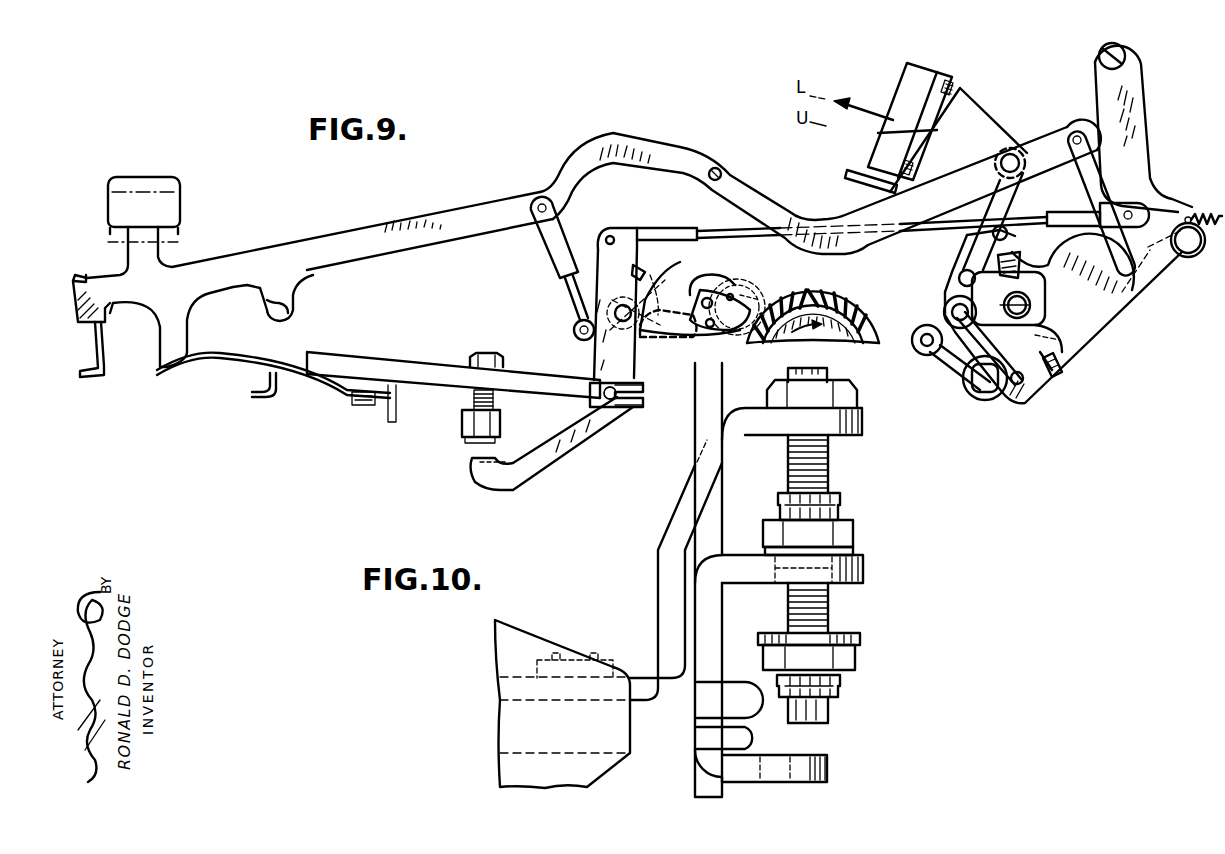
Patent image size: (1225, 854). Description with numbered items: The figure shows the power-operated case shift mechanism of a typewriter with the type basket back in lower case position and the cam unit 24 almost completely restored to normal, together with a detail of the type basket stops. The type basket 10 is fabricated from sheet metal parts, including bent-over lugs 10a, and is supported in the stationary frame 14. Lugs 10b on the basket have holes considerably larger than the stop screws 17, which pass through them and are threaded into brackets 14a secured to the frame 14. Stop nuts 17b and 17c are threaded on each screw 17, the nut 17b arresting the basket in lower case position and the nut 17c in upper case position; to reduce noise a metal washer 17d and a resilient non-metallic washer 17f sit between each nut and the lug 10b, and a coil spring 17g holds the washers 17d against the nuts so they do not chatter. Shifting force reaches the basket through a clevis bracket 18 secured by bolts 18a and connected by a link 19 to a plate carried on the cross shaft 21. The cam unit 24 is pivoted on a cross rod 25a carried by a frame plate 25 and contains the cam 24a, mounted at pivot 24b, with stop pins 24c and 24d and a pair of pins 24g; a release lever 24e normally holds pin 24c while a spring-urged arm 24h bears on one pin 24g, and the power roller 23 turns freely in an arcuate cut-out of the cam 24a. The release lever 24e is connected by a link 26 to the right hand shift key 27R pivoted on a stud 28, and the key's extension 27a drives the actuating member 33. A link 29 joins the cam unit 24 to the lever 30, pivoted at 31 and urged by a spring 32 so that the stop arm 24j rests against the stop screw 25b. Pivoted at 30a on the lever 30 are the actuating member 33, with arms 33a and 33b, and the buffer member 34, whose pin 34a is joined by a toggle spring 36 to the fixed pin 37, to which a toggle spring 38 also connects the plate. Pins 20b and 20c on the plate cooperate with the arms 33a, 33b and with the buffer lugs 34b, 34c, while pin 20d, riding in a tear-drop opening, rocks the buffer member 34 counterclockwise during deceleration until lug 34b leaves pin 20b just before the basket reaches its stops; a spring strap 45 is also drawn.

In FIG. 9, the type basket frame 10 is at (933, 82).
In FIG. 10, the bent-over lugs 10a is at (808, 757).
In FIG. 10, the lugs 10b is at (862, 570).
In FIG. 10, the stationary frame 14 is at (515, 718).
In FIG. 10, the brackets 14a is at (665, 607).
In FIG. 10, the stop screws 17 is at (832, 462).
In FIG. 10, the stop nut 17b is at (847, 530).
In FIG. 10, the stop nut 17c is at (845, 680).
In FIG. 10, the metal washer 17d is at (852, 658).
In FIG. 10, the non-metallic washer 17f is at (860, 637).
In FIG. 10, the coil spring 17g is at (835, 598).
In FIG. 9, the clevis bracket 18 is at (977, 115).
In FIG. 9, the bolts 18a is at (905, 133).
In FIG. 9, the link 19 is at (990, 207).
In FIG. 9, the pin 20b is at (1005, 228).
In FIG. 9, the pin 20c is at (1032, 395).
In FIG. 9, the pin 20d is at (1108, 322).
In FIG. 9, the cross shaft 21 is at (1004, 305).
In FIG. 9, the power roller 23 is at (830, 300).
In FIG. 9, the cam unit 24 is at (565, 445).
In FIG. 9, the cam 24a is at (765, 305).
In FIG. 9, the cam pivot 24b is at (668, 345).
In FIG. 9, the stop pin 24c is at (660, 280).
In FIG. 9, the stop pin 24d is at (750, 285).
In FIG. 9, the release lever 24e is at (660, 345).
In FIG. 9, the pins 24g is at (732, 290).
In FIG. 9, the arm 24h is at (705, 275).
In FIG. 9, the stop arm 24j is at (472, 462).
In FIG. 9, the frame plate 25 is at (435, 378).
In FIG. 9, the cross rod 25a is at (612, 400).
In FIG. 9, the stop screw 25b is at (462, 425).
In FIG. 9, the link 26 is at (550, 250).
In FIG. 9, the right hand shift key 27R is at (335, 243).
In FIG. 9, the extension 27a is at (757, 190).
In FIG. 9, the stud 28 is at (715, 168).
In FIG. 9, the link 29 is at (700, 228).
In FIG. 9, the lever 30 is at (1136, 75).
In FIG. 9, the pivot 30a is at (1178, 208).
In FIG. 9, the pivot 31 is at (1125, 45).
In FIG. 9, the spring 32 is at (1205, 200).
In FIG. 9, the actuating member 33 is at (1155, 268).
In FIG. 9, the arm 33a is at (998, 258).
In FIG. 9, the arm 33b is at (1064, 368).
In FIG. 9, the buffer member 34 is at (1143, 292).
In FIG. 9, the pin 34a is at (952, 307).
In FIG. 9, the buffer lug 34b is at (1043, 230).
In FIG. 9, the buffer lug 34c is at (1050, 337).
In FIG. 9, the toggle spring 36 is at (985, 397).
In FIG. 9, the fixed pin 37 is at (922, 337).
In FIG. 9, the toggle spring 38 is at (1010, 402).
In FIG. 9, the spring strap 45 is at (218, 363).